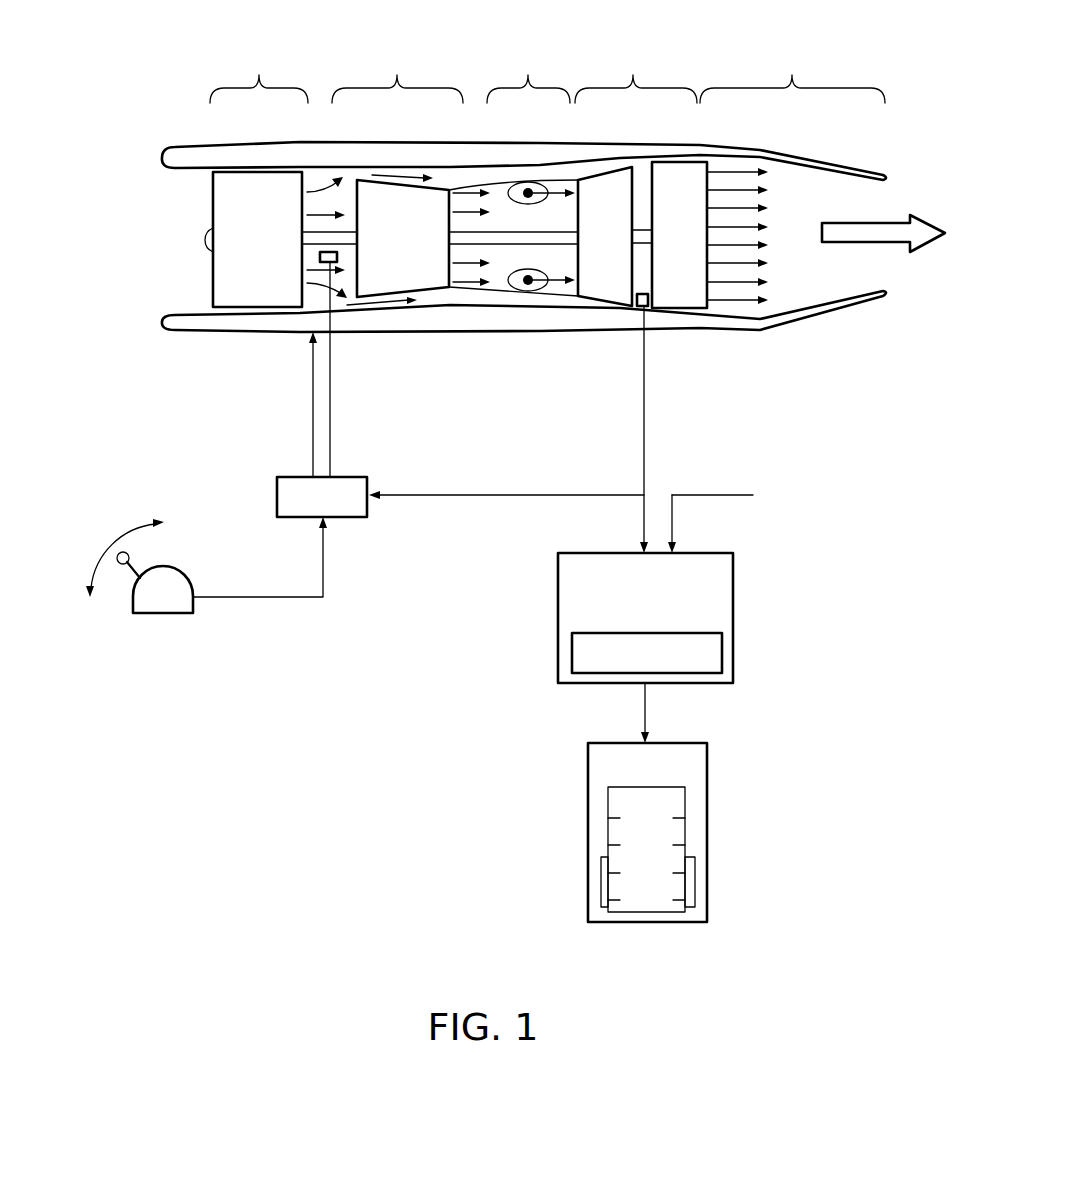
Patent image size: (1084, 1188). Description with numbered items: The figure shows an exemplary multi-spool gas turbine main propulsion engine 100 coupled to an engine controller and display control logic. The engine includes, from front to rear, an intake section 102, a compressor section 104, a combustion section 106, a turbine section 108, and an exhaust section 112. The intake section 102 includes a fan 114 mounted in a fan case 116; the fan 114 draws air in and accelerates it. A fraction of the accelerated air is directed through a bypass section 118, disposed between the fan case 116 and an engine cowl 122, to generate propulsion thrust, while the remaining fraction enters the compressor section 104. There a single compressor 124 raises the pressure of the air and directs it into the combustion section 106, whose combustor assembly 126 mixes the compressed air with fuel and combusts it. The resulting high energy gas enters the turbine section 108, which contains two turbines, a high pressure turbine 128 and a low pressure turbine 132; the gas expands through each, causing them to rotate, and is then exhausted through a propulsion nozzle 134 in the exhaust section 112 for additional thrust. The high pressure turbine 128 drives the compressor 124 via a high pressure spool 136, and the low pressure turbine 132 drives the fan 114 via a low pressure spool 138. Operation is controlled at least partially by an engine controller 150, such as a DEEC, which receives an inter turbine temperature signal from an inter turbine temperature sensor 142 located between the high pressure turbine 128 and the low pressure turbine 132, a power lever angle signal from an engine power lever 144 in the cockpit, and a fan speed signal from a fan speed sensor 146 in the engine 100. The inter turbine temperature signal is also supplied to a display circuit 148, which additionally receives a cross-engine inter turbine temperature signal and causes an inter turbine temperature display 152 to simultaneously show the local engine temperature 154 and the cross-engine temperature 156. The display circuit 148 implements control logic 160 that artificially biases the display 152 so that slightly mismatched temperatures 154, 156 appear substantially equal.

The multi-spool gas turbine main propulsion engine 100 is at (130, 163).
The intake section 102 is at (259, 73).
The compressor section 104 is at (397, 73).
The combustion section 106 is at (528, 73).
The turbine section 108 is at (636, 73).
The exhaust section 112 is at (792, 73).
The fan 114 is at (236, 255).
The fan case 116 is at (327, 152).
The bypass section 118 is at (450, 190).
The engine cowl 122 is at (472, 167).
The compressor 124 is at (381, 228).
The combustor assembly 126 is at (530, 185).
The high pressure turbine 128 is at (584, 255).
The low pressure turbine 132 is at (659, 255).
The propulsion nozzle 134 is at (816, 217).
The high pressure spool 136 is at (507, 240).
The low pressure spool 138 is at (310, 237).
The inter turbine temperature sensor 142 is at (637, 306).
The engine power lever 144 is at (190, 583).
The fan speed sensor 146 is at (337, 257).
The display circuit 148 is at (733, 570).
The engine controller 150 is at (277, 497).
The inter turbine temperature display 152 is at (707, 815).
The local engine inter turbine temperature 154 is at (610, 783).
The cross-engine inter turbine temperature 156 is at (683, 783).
The control logic 160 is at (722, 650).